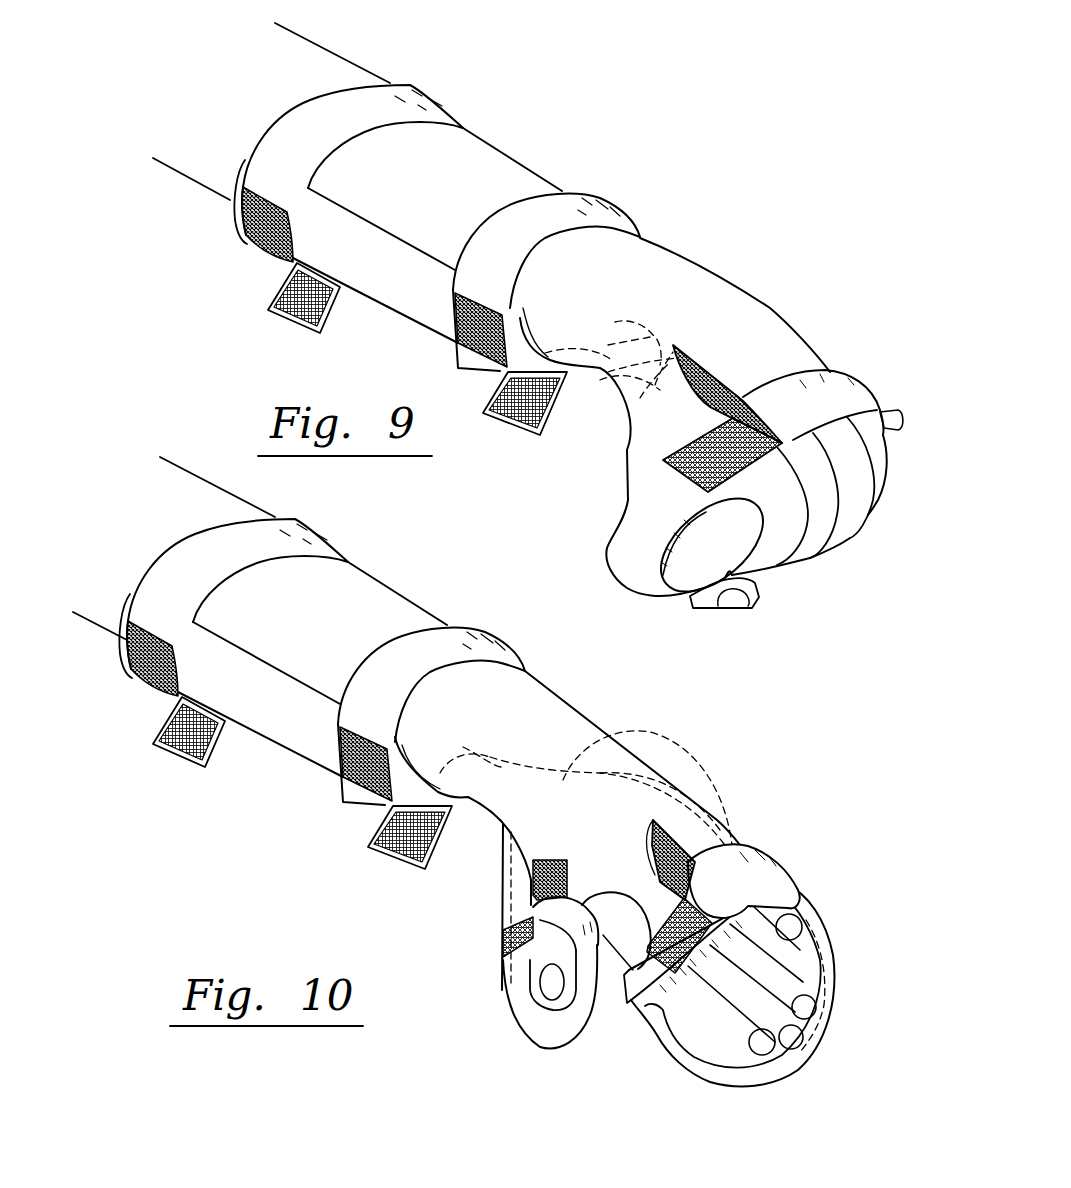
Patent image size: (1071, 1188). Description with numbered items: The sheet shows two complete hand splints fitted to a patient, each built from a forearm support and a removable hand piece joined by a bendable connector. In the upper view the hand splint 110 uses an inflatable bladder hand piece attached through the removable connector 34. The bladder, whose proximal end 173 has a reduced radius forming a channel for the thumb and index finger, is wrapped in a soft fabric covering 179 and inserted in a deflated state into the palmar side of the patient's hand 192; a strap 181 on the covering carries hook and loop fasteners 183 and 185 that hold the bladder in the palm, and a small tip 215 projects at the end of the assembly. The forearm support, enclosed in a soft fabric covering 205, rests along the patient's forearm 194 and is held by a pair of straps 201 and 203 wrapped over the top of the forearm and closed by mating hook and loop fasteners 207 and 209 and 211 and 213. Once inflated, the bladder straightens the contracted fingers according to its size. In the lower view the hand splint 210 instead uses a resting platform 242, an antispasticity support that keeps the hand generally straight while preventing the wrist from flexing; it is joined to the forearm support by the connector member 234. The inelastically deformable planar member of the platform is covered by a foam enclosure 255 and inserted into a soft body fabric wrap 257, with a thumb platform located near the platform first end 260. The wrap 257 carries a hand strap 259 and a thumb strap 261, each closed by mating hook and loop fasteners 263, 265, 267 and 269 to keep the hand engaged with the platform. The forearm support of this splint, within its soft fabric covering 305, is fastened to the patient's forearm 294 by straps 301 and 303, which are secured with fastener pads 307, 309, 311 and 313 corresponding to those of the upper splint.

In FIG. 9, the removable connector 34 is at (668, 322).
In FIG. 9, the hand splint 110 is at (548, 437).
In FIG. 9, the bladder proximal end 173 is at (605, 562).
In FIG. 9, the fabric covering 179 is at (737, 552).
In FIG. 9, the strap 181 is at (823, 390).
In FIG. 9, the hook and loop fastener 183 is at (703, 390).
In FIG. 9, the hook and loop fastener 185 is at (673, 460).
In FIG. 9, the patient's hand 192 is at (803, 343).
In FIG. 9, the patient's forearm 194 is at (496, 143).
In FIG. 9, the strap 201 is at (613, 213).
In FIG. 9, the strap 203 is at (430, 100).
In FIG. 9, the soft fabric covering 205 is at (414, 312).
In FIG. 9, the hook and loop fastener 207 is at (472, 345).
In FIG. 9, the hook and loop fastener 209 is at (527, 410).
In FIG. 10, the hand splint 210 is at (433, 883).
In FIG. 9, the hook and loop fastener 211 is at (242, 233).
In FIG. 9, the hook and loop fastener 213 is at (273, 290).
In FIG. 9, the thumb tip 215 is at (920, 378).
In FIG. 10, the connector member 234 is at (502, 760).
In FIG. 10, the resting platform 242 is at (838, 933).
In FIG. 10, the foam enclosure 255 is at (838, 973).
In FIG. 10, the body fabric wrap 257 is at (720, 1070).
In FIG. 10, the hand strap 259 is at (770, 860).
In FIG. 10, the platform first end 260 is at (603, 733).
In FIG. 10, the thumb strap 261 is at (568, 910).
In FIG. 10, the hook and loop fastener 263 is at (660, 830).
In FIG. 10, the hook and loop fastener 265 is at (670, 955).
In FIG. 10, the hook and loop fastener 267 is at (533, 890).
In FIG. 10, the hook and loop fastener 269 is at (503, 947).
In FIG. 10, the patient's forearm 294 is at (381, 585).
In FIG. 10, the strap 301 is at (497, 657).
In FIG. 10, the strap 303 is at (317, 540).
In FIG. 10, the soft fabric covering 305 is at (301, 756).
In FIG. 10, the distal hook fastener pad 307 is at (357, 779).
In FIG. 10, the distal tab 309 is at (407, 858).
In FIG. 10, the proximal hook fastener pad 311 is at (132, 667).
In FIG. 10, the proximal tab 313 is at (157, 733).